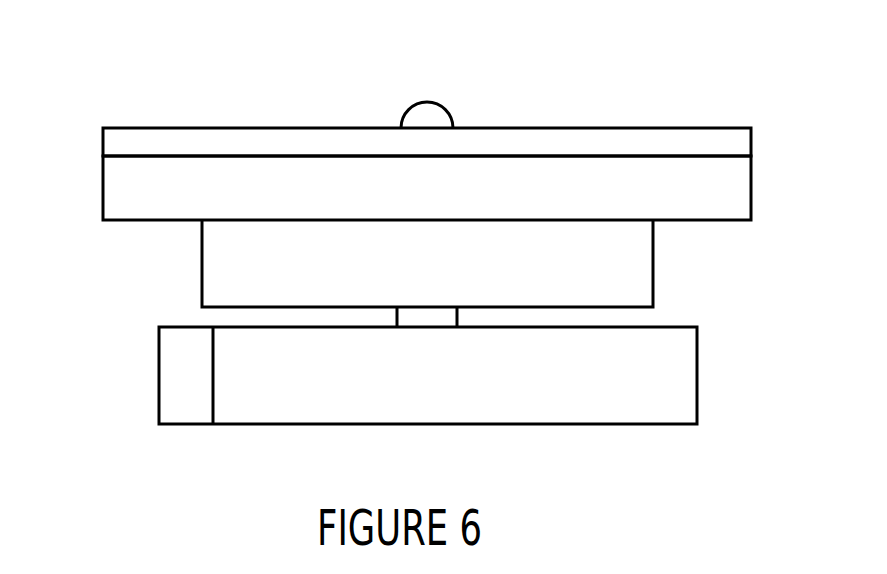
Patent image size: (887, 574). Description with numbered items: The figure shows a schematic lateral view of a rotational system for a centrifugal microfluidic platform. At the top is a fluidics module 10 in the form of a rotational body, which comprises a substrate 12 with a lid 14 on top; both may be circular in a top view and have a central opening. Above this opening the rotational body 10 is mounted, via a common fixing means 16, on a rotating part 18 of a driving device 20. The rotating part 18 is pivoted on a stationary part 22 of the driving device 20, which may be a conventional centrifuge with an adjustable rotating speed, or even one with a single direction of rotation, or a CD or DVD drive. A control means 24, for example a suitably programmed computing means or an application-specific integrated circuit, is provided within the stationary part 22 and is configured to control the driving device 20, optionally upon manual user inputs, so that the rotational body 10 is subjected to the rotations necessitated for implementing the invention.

The fluidics module 10 is at (92, 143).
The substrate 12 is at (751, 185).
The lid 14 is at (751, 138).
The common fixing means 16 is at (427, 102).
The rotating part 18 is at (653, 258).
The driving device 20 is at (760, 331).
The stationary part 22 is at (697, 373).
The control means 24 is at (186, 408).